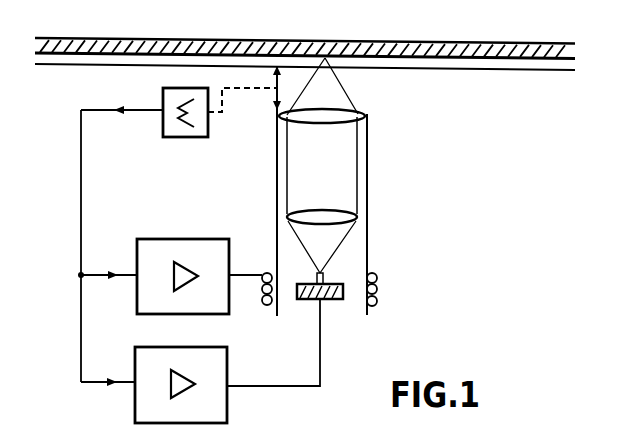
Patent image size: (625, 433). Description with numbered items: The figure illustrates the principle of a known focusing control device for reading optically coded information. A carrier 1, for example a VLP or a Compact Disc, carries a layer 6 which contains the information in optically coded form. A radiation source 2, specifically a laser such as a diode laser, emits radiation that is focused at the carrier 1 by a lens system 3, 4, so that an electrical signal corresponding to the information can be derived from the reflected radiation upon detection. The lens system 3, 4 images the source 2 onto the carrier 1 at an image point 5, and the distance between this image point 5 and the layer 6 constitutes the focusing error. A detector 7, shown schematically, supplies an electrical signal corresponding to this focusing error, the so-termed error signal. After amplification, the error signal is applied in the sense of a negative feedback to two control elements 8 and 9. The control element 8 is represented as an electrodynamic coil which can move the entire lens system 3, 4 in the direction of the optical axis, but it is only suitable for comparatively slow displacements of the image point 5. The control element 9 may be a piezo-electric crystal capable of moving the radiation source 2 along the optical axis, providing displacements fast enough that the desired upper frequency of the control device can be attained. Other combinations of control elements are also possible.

The carrier for optically coded information 1 is at (483, 50).
The radiation source 2 is at (324, 279).
The lens system 3 is at (368, 214).
The lens system 4 is at (368, 114).
The image point 5 is at (326, 56).
The layer 6 is at (427, 62).
The detector 7 is at (208, 123).
The control element 8 is at (263, 294).
The control element 9 is at (330, 300).